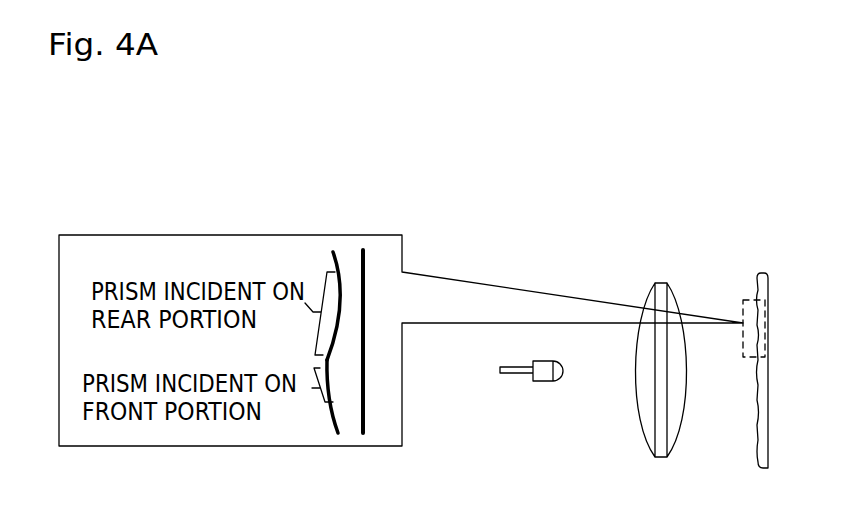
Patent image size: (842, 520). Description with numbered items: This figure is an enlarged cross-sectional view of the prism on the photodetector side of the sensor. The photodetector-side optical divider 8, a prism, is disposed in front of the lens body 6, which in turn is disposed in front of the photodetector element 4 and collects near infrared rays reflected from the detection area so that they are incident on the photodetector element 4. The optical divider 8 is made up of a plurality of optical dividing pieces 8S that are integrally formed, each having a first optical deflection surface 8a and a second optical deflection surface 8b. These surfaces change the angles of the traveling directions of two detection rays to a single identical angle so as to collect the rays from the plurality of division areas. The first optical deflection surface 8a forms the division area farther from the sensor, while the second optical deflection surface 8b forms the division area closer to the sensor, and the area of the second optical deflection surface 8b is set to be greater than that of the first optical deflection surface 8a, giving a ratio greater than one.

The photodetector element 4 is at (541, 383).
The lens body 6 is at (638, 402).
The photodetector-side optical divider 8 is at (387, 373).
The optical dividing piece 8S is at (353, 340).
The first optical deflection surface 8a is at (339, 378).
The second optical deflection surface 8b is at (330, 335).